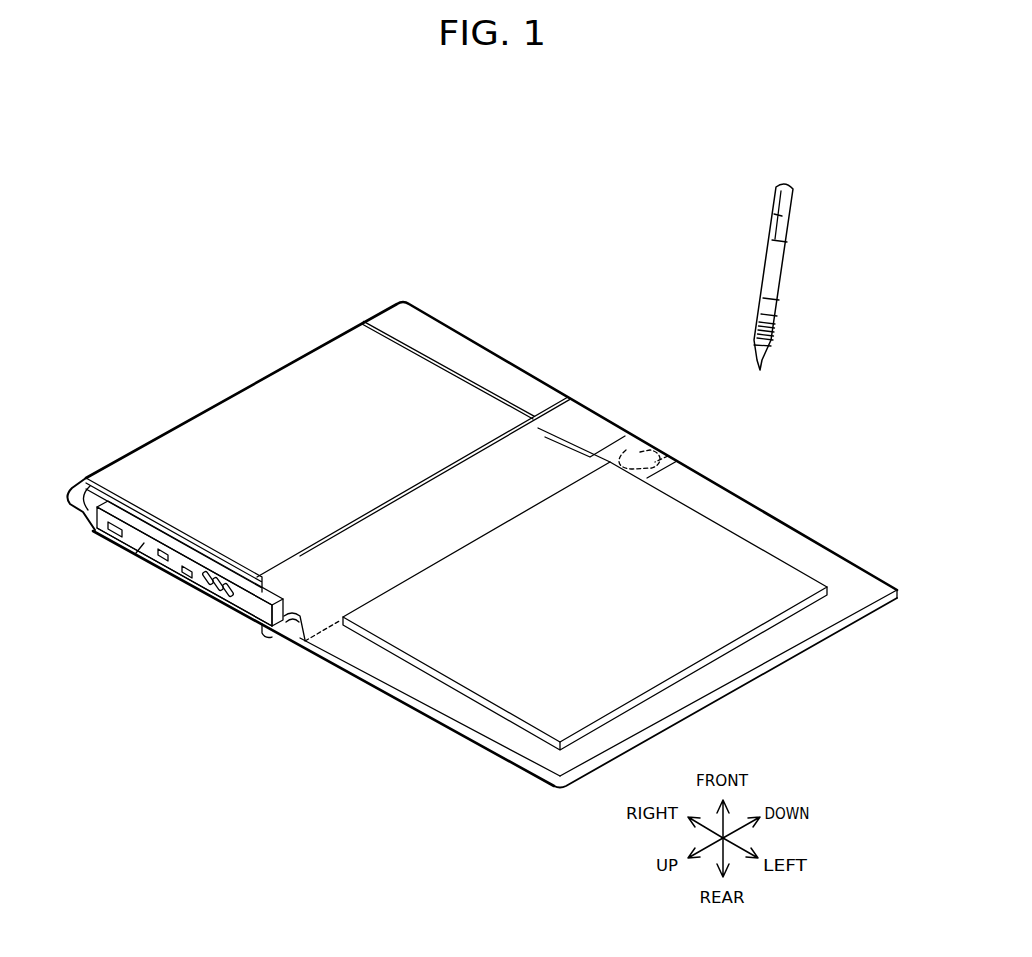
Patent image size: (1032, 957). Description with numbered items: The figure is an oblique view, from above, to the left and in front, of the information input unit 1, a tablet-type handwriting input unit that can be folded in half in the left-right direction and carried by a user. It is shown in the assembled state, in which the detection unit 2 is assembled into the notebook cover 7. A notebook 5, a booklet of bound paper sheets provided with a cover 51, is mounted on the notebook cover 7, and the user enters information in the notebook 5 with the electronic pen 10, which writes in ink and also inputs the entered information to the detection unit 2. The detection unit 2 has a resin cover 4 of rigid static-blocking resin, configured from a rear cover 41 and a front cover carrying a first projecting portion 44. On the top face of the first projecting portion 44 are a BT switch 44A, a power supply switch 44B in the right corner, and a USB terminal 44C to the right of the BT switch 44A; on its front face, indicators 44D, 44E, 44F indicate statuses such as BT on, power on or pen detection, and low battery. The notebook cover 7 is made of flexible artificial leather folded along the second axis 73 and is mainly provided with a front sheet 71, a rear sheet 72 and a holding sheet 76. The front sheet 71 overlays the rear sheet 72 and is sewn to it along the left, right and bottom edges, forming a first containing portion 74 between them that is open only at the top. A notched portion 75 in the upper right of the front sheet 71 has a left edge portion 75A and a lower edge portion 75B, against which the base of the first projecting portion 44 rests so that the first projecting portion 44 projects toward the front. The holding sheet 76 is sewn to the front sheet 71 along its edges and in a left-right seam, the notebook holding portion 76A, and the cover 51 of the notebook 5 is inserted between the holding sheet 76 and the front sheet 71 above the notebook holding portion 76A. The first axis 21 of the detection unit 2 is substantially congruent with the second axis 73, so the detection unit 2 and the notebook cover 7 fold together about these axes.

The information input unit 1 is at (603, 202).
The electronic pen 10 is at (788, 167).
The detection unit 2 is at (153, 568).
The resin cover 4 is at (280, 626).
The rear cover 41 is at (140, 547).
The first projecting portion 44 is at (158, 533).
The BT switch 44A is at (192, 581).
The power supply switch 44B is at (115, 534).
The USB terminal 44C is at (170, 566).
The indicator 44D is at (230, 597).
The indicator 44E is at (220, 593).
The indicator 44F is at (210, 589).
The notebook 5 is at (699, 560).
The cover 51 is at (512, 468).
The first axis 21 is at (668, 456).
The notebook cover 7 is at (807, 543).
The front sheet 71 is at (752, 662).
The rear sheet 72 is at (258, 628).
The second axis 73 is at (626, 450).
The first containing portion 74 is at (88, 503).
The notched portion 75 is at (330, 662).
The left edge portion 75A is at (300, 648).
The lower edge portion 75B is at (77, 494).
The holding sheet 76 is at (322, 395).
The notebook holding portion 76A is at (428, 358).